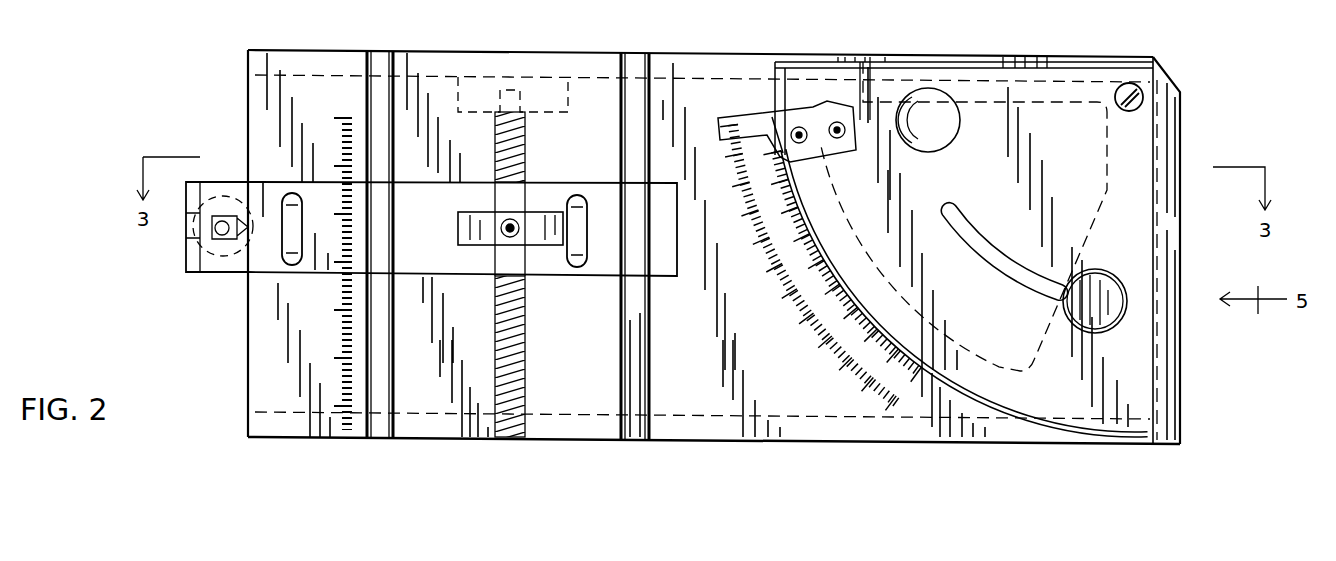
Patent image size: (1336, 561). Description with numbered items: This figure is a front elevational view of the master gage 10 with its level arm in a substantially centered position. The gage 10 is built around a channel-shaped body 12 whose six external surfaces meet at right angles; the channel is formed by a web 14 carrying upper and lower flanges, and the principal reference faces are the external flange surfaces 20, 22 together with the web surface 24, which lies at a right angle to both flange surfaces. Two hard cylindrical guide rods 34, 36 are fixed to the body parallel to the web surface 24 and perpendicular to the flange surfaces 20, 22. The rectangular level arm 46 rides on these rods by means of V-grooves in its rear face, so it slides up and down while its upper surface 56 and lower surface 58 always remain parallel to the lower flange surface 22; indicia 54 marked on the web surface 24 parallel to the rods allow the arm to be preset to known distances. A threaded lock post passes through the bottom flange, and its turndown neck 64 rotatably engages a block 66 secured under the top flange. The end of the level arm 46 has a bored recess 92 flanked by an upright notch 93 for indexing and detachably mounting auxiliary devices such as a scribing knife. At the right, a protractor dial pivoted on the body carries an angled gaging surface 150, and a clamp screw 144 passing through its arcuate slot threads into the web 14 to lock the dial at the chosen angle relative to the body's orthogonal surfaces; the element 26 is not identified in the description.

The master gage 10 is at (1210, 81).
The body 12 is at (712, 50).
The web 14 is at (752, 72).
The external flange surface 20 is at (455, 52).
The external flange surface 22 is at (560, 438).
The web surface 24 is at (700, 438).
The left edge of base 26 is at (248, 340).
The guide rod 34 is at (370, 68).
The guide rod 36 is at (634, 54).
The level arm 46 is at (231, 287).
The indicia 54 is at (343, 117).
The upper surface 56 is at (241, 182).
The lower surface 58 is at (287, 262).
The turndown neck 64 is at (508, 90).
The block 66 is at (550, 88).
The bored recess 92 is at (190, 258).
The notch 93 is at (197, 271).
The clamp screw 144 is at (1105, 272).
The gaging surface 150 is at (1180, 410).